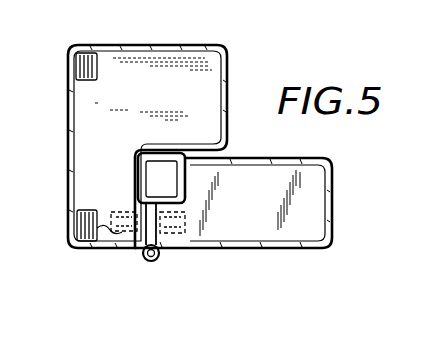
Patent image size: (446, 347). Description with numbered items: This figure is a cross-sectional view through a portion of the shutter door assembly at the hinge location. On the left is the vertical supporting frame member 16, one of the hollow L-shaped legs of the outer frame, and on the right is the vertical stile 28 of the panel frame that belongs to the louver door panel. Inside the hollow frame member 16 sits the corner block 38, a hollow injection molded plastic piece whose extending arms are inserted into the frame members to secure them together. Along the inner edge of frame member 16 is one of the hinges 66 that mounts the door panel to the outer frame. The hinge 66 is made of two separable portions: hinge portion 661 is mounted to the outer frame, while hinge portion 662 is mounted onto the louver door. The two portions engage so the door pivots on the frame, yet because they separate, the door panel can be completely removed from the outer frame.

The vertical supporting frame member 16 is at (247, 77).
The vertical stile 28 is at (345, 165).
The corner block 38 is at (92, 124).
The hinge 66 is at (148, 266).
The hinge portion 661 is at (108, 244).
The hinge portion 662 is at (172, 242).